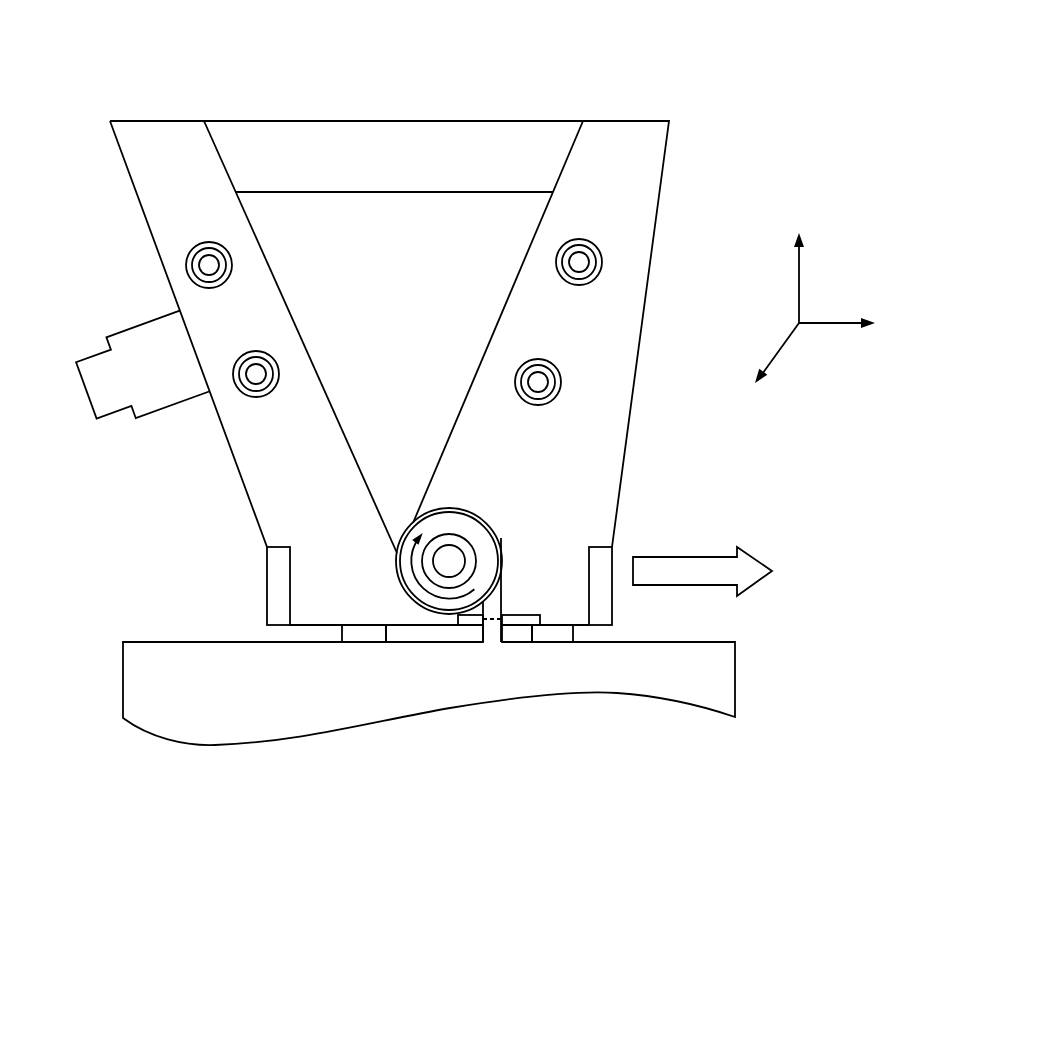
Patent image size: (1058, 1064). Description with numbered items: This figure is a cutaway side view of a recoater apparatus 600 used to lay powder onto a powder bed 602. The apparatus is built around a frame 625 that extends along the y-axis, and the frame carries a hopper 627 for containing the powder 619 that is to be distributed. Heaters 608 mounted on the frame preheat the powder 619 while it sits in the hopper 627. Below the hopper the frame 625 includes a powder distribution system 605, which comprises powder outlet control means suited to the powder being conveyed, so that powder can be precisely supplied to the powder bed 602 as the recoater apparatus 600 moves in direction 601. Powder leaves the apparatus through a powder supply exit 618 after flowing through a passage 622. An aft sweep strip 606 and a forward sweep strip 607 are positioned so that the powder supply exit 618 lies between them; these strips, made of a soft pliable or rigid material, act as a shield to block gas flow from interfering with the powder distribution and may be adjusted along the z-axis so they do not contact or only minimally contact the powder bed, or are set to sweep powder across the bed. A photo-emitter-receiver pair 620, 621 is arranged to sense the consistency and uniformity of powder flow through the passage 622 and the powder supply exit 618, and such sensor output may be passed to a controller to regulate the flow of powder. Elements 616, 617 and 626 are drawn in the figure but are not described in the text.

The recoater apparatus 600 is at (736, 98).
The direction 601 is at (705, 563).
The powder bed 602 is at (270, 698).
The powder distribution system 605 is at (487, 484).
The aft sweep strip 606 is at (365, 642).
The forward sweep strip 607 is at (550, 642).
The heaters 608 is at (580, 262).
The left stop 616 is at (267, 600).
The right stop 617 is at (613, 598).
The powder supply exit 618 is at (492, 602).
The powder 619 is at (372, 218).
The photo-emitter-receiver pair 620 is at (470, 627).
The photo-emitter-receiver pair 621 is at (519, 627).
The passage 622 is at (443, 508).
The frame 625 is at (162, 187).
The mounting block 626 is at (127, 329).
The hopper 627 is at (440, 152).